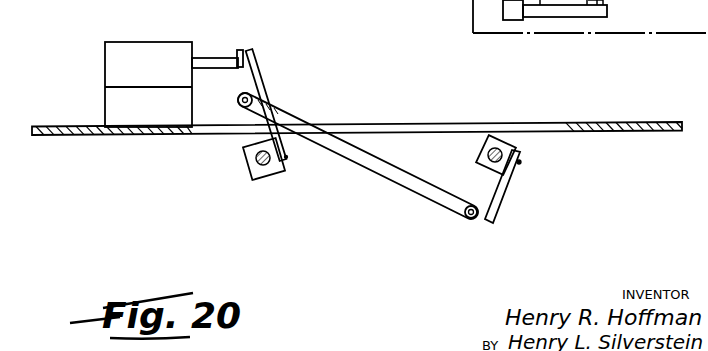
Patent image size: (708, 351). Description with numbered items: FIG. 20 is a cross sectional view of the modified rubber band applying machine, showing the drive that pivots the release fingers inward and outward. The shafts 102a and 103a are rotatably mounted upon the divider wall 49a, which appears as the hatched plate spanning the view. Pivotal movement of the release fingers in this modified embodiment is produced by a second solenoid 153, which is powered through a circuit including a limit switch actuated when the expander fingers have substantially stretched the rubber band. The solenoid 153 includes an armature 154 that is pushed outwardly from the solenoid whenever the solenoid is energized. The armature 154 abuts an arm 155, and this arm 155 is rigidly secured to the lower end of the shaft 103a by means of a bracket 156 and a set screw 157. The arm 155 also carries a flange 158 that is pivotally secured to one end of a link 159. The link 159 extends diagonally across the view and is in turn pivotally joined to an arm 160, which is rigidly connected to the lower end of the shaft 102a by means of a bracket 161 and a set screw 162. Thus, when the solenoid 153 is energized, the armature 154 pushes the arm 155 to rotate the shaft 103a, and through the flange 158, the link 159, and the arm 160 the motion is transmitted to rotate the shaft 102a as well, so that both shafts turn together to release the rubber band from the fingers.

The divider wall 49a is at (620, 121).
The second solenoid 153 is at (152, 52).
The armature 154 is at (213, 60).
The arm 155 is at (256, 54).
The bracket 156 is at (264, 181).
The set screw 157 is at (287, 158).
The flange 158 is at (253, 99).
The link 159 is at (376, 173).
The arm 160 is at (491, 206).
The bracket 161 is at (480, 160).
The set screw 162 is at (521, 163).
The shaft 102a is at (514, 144).
The shaft 103a is at (249, 157).